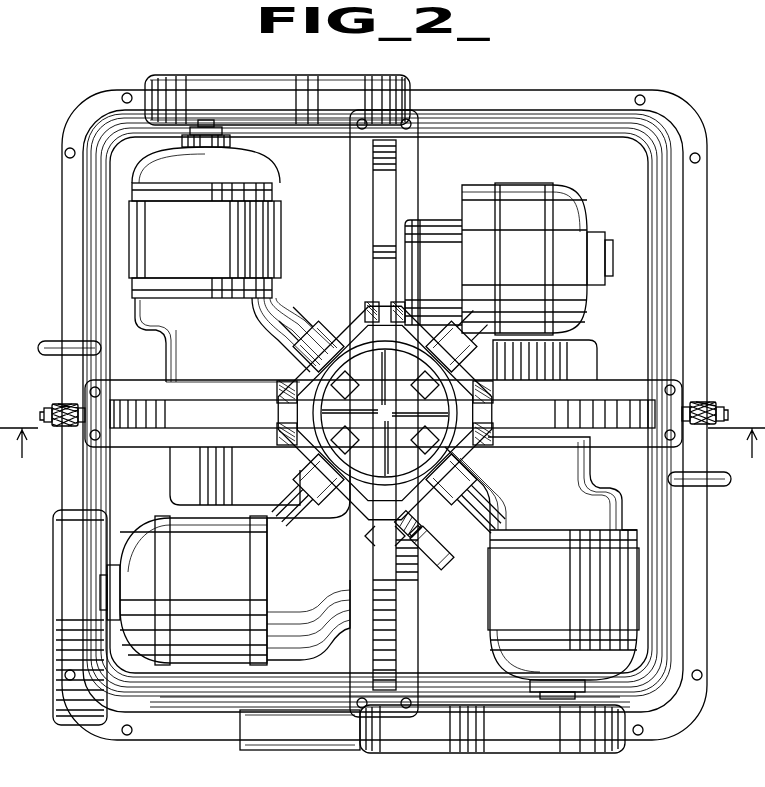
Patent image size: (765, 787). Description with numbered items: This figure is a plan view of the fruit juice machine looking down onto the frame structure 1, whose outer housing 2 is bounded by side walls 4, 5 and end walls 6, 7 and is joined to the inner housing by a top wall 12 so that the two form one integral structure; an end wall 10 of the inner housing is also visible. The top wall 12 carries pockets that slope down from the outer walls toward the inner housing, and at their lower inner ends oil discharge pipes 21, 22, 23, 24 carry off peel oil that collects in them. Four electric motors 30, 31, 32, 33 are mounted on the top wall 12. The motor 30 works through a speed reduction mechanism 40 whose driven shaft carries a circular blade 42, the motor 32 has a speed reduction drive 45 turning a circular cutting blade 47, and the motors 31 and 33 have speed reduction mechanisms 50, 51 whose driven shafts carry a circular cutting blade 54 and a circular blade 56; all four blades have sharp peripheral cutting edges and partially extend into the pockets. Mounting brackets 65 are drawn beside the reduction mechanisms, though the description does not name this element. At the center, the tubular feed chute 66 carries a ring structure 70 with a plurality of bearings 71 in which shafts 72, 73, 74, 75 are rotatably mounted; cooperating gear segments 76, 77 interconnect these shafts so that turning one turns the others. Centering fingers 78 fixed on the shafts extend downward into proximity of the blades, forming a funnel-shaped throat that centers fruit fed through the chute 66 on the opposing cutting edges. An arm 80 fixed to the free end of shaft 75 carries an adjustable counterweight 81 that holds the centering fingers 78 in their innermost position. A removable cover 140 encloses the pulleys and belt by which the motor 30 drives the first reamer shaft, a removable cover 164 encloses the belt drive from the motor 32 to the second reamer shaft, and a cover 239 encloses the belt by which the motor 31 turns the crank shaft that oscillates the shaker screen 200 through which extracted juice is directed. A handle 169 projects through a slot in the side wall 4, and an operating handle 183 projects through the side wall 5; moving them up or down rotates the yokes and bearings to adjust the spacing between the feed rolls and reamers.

The frame structure 1 is at (707, 300).
The outer housing 2 is at (688, 520).
The side wall 4 is at (100, 301).
The side wall 5 is at (668, 565).
The end wall 6 is at (550, 133).
The end wall 7 is at (232, 700).
The end wall 10 is at (302, 322).
The top wall 12 is at (612, 183).
The oil discharge pipe 21 is at (46, 412).
The oil discharge pipe 22 is at (712, 398).
The oil discharge pipe 23 is at (732, 482).
The oil discharge pipe 24 is at (40, 345).
The electric motor 30 is at (183, 249).
The electric motor 31 is at (218, 570).
The electric motor 32 is at (542, 598).
The electric motor 33 is at (530, 243).
The speed reduction mechanism 40 is at (228, 361).
The circular blade 42 is at (354, 410).
The speed reduction drive 45 is at (540, 503).
The circular cutting blade 47 is at (424, 414).
The speed reduction mechanism 50 is at (333, 559).
The speed reduction mechanism 51 is at (448, 273).
The circular cutting blade 54 is at (380, 450).
The circular blade 56 is at (380, 370).
The mounting bracket 65 is at (200, 458).
The tubular feed chute 66 is at (430, 514).
The ring structure 70 is at (350, 430).
The bearing 71 is at (275, 378).
The shaft 72 is at (444, 344).
The shaft 73 is at (338, 330).
The shaft 74 is at (300, 480).
The shaft 75 is at (468, 472).
The gear segment 76 is at (396, 310).
The gear segment 77 is at (368, 308).
The centering finger 78 is at (385, 412).
The arm 80 is at (418, 524).
The counterweight 81 is at (446, 548).
The removable cover 140 is at (318, 68).
The removable cover 164 is at (516, 742).
The handle 169 is at (52, 430).
The operating handle 183 is at (716, 428).
The shaker screen 200 is at (308, 745).
The cover 239 is at (78, 602).